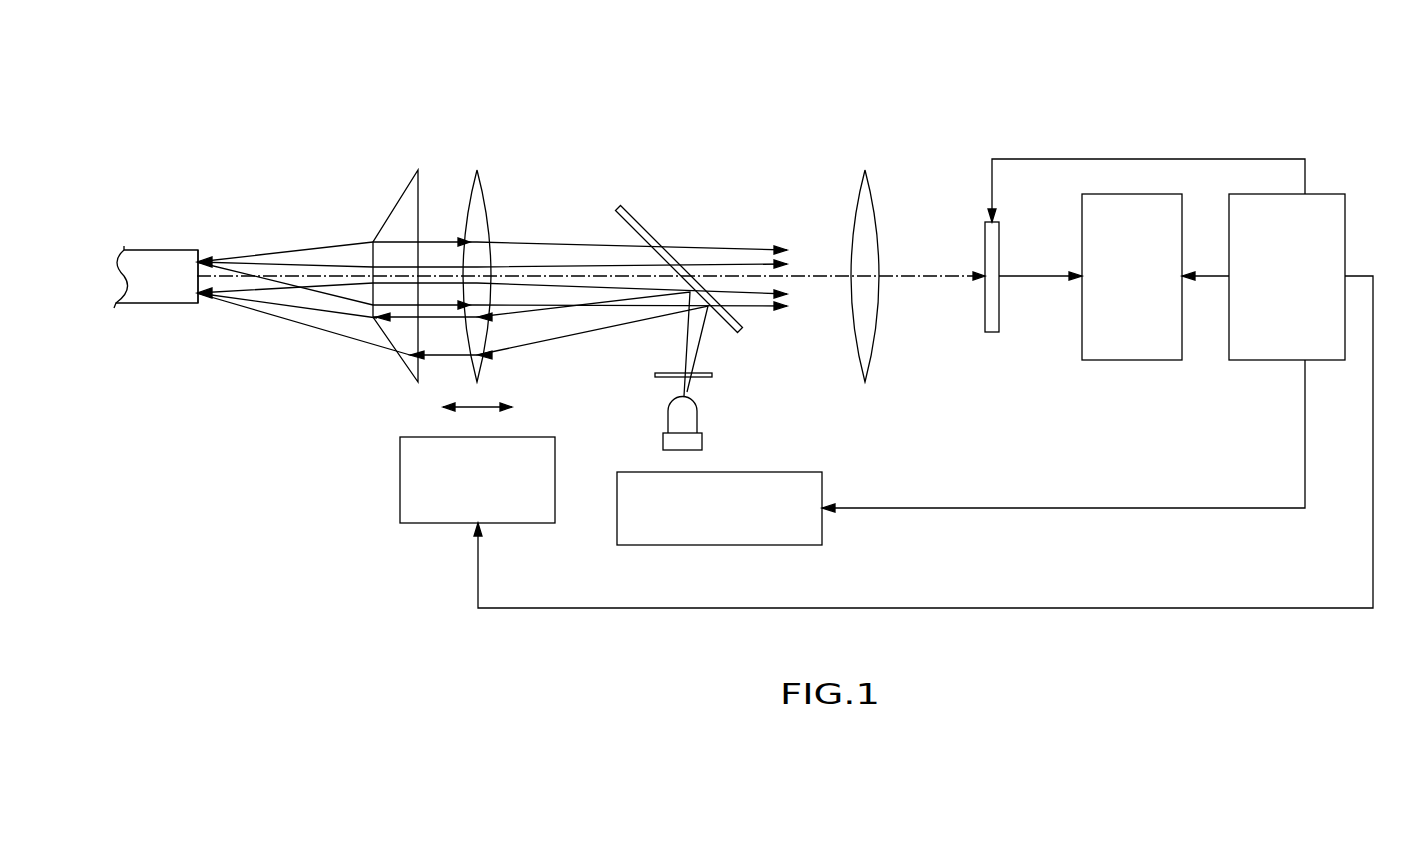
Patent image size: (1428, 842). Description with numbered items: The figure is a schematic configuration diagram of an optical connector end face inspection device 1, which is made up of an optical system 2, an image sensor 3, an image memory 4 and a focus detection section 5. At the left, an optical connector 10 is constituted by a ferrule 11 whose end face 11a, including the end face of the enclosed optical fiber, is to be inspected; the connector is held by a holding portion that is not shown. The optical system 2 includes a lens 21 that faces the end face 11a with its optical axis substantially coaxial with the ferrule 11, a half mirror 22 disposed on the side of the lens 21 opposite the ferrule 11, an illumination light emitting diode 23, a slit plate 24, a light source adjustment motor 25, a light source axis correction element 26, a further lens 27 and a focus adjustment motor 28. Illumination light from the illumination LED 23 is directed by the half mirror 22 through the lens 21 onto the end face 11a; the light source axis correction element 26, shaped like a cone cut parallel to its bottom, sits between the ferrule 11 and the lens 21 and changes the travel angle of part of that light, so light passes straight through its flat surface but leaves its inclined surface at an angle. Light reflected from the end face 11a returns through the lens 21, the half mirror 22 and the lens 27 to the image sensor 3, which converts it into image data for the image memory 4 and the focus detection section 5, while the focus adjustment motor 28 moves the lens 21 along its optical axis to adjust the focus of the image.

The optical connector end face inspection device 1 is at (937, 95).
The optical system 2 is at (508, 150).
The image sensor 3 is at (992, 333).
The image memory 4 is at (1150, 361).
The focus detection section 5 is at (1346, 208).
The optical connector 10 is at (168, 270).
The ferrule 11 is at (138, 304).
The end face 11a is at (199, 304).
The lens 21 is at (484, 200).
The half mirror 22 is at (634, 212).
The illumination light emitting diode 23 is at (697, 420).
The slit plate 24 is at (712, 375).
The light source adjustment motor 25 is at (637, 546).
The light source axis correction element 26 is at (410, 182).
The lens 27 is at (875, 200).
The focus adjustment motor 28 is at (421, 524).